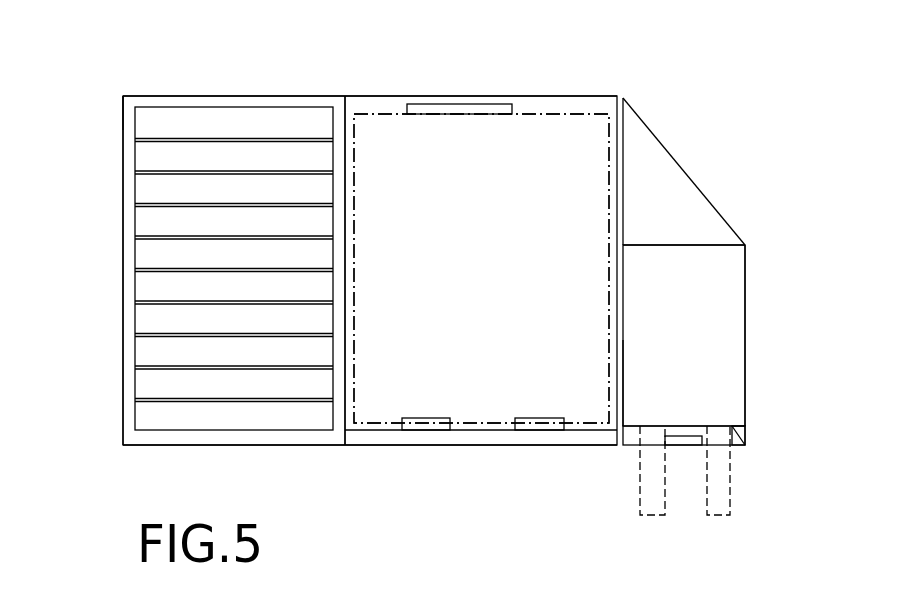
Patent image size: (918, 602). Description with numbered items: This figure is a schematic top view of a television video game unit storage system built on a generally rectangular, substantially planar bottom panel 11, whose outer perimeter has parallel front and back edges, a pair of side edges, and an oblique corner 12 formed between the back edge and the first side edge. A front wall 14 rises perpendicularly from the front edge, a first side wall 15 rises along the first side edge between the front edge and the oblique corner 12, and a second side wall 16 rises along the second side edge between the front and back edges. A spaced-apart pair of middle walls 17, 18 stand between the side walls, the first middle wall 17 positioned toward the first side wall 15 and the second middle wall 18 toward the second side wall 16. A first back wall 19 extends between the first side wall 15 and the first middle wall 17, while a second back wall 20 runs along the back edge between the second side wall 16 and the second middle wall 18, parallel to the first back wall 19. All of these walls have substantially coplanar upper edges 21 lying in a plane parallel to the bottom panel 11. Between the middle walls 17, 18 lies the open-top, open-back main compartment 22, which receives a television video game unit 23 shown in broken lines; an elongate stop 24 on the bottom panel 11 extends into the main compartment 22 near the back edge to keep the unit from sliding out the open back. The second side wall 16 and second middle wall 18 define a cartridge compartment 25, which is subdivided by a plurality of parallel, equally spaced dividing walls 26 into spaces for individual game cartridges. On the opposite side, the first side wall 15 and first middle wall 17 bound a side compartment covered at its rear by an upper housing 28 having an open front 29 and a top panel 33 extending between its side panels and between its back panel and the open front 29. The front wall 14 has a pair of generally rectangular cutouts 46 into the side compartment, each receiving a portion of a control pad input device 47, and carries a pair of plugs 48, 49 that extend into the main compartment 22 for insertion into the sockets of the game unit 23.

The bottom panel 11 is at (572, 96).
The oblique corner 12 is at (665, 147).
The front wall 14 is at (300, 445).
The first side wall 15 is at (747, 348).
The second side wall 16 is at (123, 325).
The first middle wall 17 is at (620, 122).
The second middle wall 18 is at (350, 107).
The first back wall 19 is at (670, 245).
The second back wall 20 is at (272, 96).
The upper edges 21 is at (130, 258).
The main compartment 22 is at (534, 58).
The television video game unit 23 is at (398, 107).
The elongate stop 24 is at (480, 108).
The cartridge compartment 25 is at (236, 85).
The dividing walls 26 is at (158, 203).
The upper housing 28 is at (759, 304).
The open front 29 is at (748, 443).
The top panel 33 is at (738, 391).
The cutouts 46 is at (705, 445).
The control pad input device 47 is at (652, 522).
The plug 48 is at (423, 417).
The plug 49 is at (527, 408).